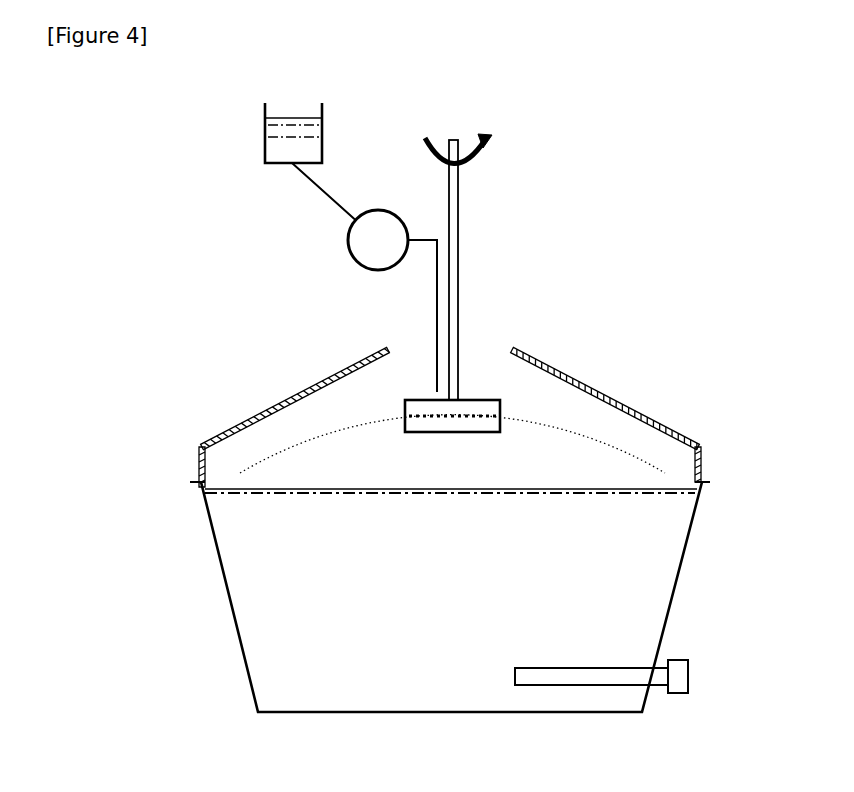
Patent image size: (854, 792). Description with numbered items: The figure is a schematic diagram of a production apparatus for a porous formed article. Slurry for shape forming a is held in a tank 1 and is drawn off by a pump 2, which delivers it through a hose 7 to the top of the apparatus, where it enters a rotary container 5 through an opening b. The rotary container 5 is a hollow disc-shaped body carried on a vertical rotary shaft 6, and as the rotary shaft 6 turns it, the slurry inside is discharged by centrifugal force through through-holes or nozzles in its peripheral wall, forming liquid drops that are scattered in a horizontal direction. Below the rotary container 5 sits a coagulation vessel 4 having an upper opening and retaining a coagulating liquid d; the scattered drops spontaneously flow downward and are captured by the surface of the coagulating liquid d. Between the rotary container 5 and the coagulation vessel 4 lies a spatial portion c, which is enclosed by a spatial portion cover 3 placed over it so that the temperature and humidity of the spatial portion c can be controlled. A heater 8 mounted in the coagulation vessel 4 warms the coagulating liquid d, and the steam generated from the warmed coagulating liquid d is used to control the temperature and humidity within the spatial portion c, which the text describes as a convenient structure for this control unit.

The tank 1 is at (263, 148).
The slurry for shape forming a is at (305, 114).
The pump 2 is at (340, 243).
The hose 7 is at (428, 235).
The rotary shaft 6 is at (465, 192).
The rotary container 5 is at (472, 397).
The spatial portion cover 3 is at (323, 377).
The opening b is at (408, 332).
The spatial portion c is at (311, 411).
The coagulation vessel 4 is at (230, 615).
The coagulating liquid d is at (280, 541).
The heater 8 is at (682, 653).